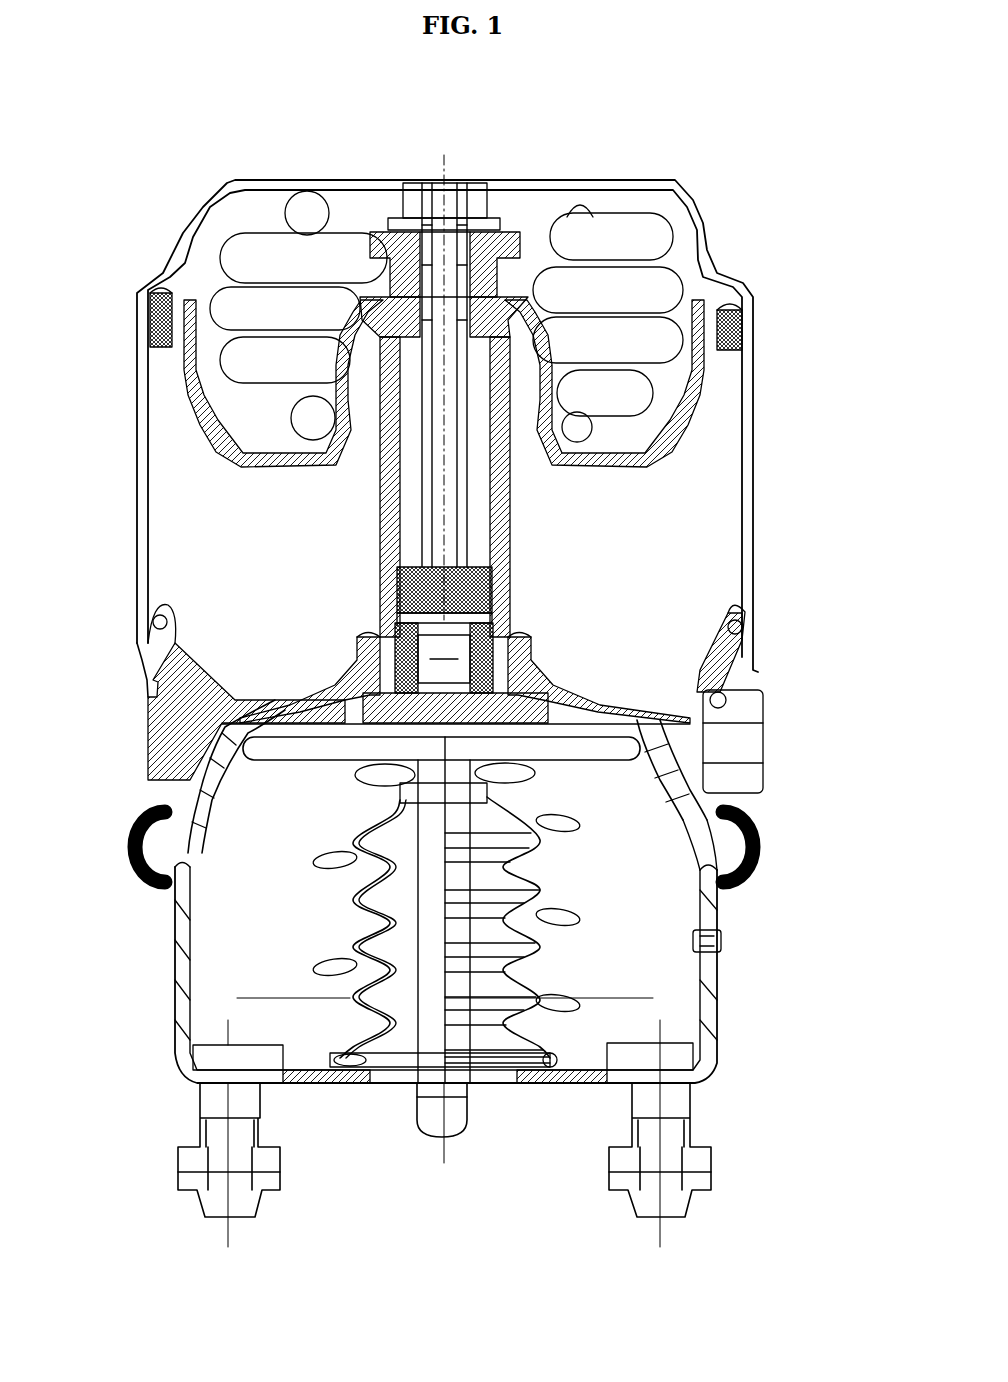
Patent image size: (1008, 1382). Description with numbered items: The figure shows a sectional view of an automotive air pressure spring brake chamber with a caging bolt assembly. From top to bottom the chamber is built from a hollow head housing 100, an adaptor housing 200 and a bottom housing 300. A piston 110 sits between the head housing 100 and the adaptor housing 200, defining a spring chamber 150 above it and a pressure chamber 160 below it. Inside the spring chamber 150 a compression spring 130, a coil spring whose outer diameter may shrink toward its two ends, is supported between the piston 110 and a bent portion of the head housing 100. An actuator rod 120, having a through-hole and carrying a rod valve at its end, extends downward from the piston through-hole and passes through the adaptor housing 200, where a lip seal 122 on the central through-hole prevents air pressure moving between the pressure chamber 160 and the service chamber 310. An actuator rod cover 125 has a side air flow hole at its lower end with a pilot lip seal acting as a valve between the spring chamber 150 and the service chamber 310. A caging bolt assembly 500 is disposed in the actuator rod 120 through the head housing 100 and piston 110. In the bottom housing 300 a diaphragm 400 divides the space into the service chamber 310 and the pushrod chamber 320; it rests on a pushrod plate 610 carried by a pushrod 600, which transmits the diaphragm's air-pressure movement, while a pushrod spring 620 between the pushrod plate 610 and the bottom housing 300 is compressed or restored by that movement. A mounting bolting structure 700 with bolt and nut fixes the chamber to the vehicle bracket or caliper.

The head housing 100 is at (700, 214).
The piston 110 is at (720, 400).
The actuator rod 120 is at (513, 523).
The lip seal 122 is at (540, 647).
The actuator rod cover 125 is at (385, 627).
The compression spring 130 is at (718, 332).
The spring chamber 150 is at (675, 262).
The pressure chamber 160 is at (700, 478).
The adaptor housing 200 is at (757, 668).
The bottom housing 300 is at (720, 1000).
The service chamber 310 is at (765, 725).
The pushrod chamber 320 is at (722, 940).
The diaphragm 400 is at (740, 800).
The caging bolt assembly 500 is at (495, 200).
The pushrod 600 is at (470, 1120).
The pushrod plate 610 is at (305, 778).
The pushrod spring 620 is at (325, 972).
The mounting bolting structure 700 is at (690, 1115).